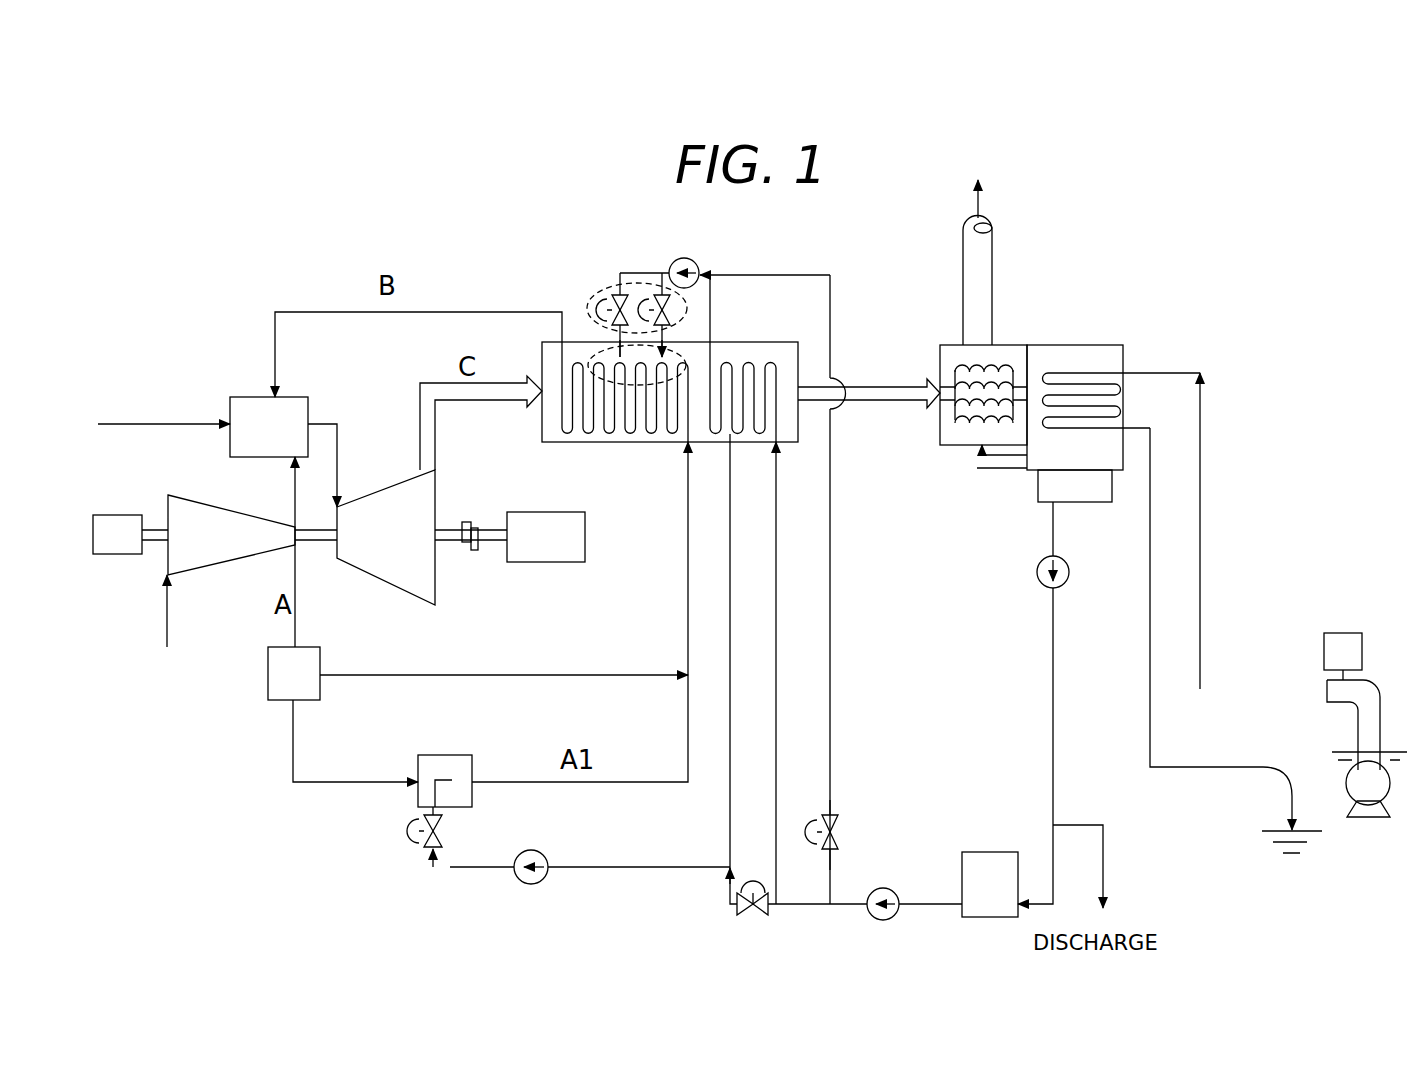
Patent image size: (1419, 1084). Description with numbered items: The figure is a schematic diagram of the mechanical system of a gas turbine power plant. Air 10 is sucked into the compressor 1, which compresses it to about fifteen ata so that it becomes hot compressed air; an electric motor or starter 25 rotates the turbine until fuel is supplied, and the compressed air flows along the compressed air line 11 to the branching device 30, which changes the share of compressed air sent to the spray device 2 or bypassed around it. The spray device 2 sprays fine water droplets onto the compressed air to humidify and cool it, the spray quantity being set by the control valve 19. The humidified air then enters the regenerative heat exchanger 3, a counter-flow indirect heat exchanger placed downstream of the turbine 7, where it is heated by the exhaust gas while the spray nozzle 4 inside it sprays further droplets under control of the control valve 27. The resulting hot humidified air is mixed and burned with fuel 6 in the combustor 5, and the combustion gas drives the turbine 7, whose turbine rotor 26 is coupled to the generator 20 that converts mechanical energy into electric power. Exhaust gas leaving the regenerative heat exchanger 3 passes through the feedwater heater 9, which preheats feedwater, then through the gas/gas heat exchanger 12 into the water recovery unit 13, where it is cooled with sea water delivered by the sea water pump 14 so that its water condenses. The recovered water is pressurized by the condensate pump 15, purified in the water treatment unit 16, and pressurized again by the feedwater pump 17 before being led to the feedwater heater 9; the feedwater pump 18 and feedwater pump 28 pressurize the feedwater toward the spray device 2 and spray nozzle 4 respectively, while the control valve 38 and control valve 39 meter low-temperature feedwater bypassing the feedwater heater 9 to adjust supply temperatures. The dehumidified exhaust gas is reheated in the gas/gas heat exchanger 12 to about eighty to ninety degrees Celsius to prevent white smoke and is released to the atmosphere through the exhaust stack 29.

The compressor 1 is at (198, 498).
The spray device 2 is at (444, 755).
The regenerative heat exchanger 3 is at (600, 442).
The spray nozzle 4 is at (593, 350).
The combustor 5 is at (245, 397).
The fuel 6 is at (152, 424).
The turbine 7 is at (393, 481).
The feedwater heater 9 is at (753, 361).
The air 10 is at (167, 633).
The compressed air line 11 is at (293, 487).
The gas/gas heat exchanger 12 is at (965, 408).
The water recovery unit 13 is at (1077, 383).
The sea water pump 14 is at (1357, 712).
The condensate pump 15 is at (1037, 572).
The water treatment unit 16 is at (981, 858).
The feedwater pump 17 is at (884, 887).
The feedwater pump 18 is at (528, 884).
The control valve 19 is at (417, 844).
The generator 20 is at (518, 512).
The electric motor or starter 25 is at (108, 513).
The turbine rotor 26 is at (452, 542).
The control valve 27 is at (607, 288).
The feedwater pump 28 is at (690, 258).
The exhaust stack 29 is at (970, 270).
The branching device 30 is at (311, 646).
The control valve 38 is at (765, 909).
The control valve 39 is at (840, 829).